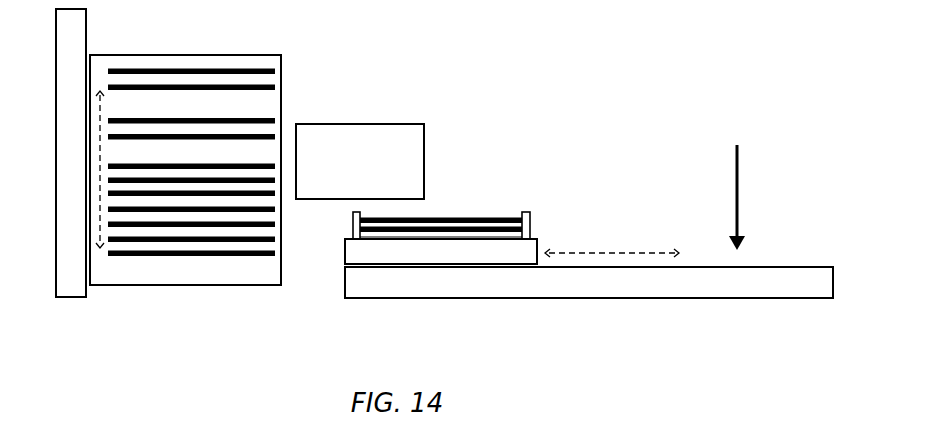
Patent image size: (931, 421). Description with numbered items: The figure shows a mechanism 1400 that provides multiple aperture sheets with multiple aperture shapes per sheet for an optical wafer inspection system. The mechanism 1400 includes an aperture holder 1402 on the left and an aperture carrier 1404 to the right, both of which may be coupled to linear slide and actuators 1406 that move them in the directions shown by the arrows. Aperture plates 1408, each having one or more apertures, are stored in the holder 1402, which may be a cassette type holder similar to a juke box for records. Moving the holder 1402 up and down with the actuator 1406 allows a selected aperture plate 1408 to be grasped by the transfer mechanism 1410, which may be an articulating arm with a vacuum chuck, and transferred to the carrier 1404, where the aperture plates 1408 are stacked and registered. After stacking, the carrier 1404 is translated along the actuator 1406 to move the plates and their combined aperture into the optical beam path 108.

The mechanism 1400 is at (473, 50).
The aperture holder 1402 is at (217, 285).
The aperture carrier 1404 is at (424, 258).
The linear slide and actuators 1406 is at (81, 168).
The aperture plates 1408 is at (265, 121).
The transfer mechanism 1410 is at (342, 169).
The optical beam path 108 is at (739, 193).